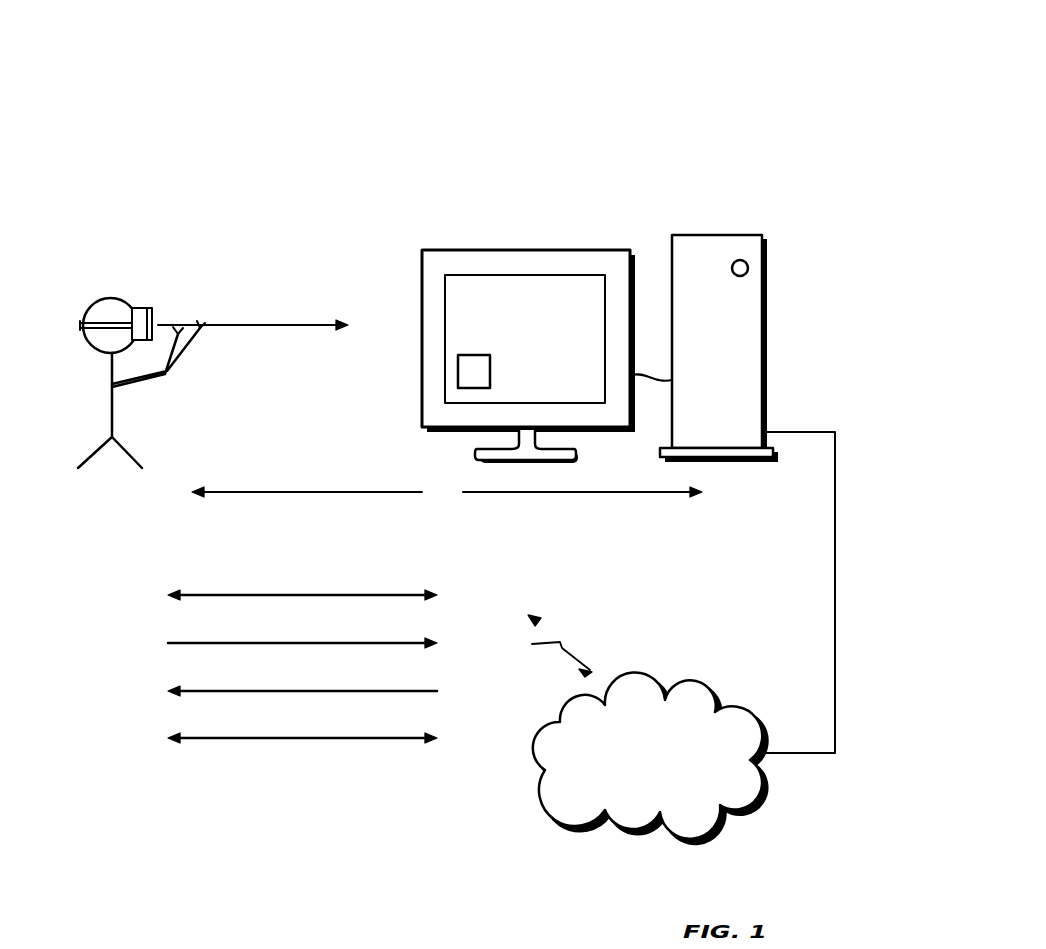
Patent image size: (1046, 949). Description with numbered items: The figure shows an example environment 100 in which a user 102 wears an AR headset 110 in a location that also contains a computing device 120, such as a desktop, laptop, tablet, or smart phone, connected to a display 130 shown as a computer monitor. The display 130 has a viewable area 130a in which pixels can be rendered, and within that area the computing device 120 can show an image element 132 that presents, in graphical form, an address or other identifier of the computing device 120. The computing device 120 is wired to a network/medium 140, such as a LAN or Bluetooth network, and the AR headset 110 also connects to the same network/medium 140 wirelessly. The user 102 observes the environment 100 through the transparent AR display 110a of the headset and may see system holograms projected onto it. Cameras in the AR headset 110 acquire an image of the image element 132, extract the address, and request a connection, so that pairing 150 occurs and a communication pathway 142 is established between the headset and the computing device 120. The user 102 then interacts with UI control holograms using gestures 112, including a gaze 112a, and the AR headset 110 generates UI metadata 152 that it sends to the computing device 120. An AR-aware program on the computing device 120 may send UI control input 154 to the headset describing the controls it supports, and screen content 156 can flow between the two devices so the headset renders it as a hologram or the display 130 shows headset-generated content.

The environment 100 is at (768, 75).
The user 102 is at (112, 372).
The AR headset 110 is at (137, 308).
The AR display 110a is at (222, 306).
The gestures 112 is at (205, 360).
The gaze 112a is at (332, 306).
The computing device 120 is at (710, 235).
The display 130 is at (450, 250).
The viewable area 130a is at (562, 288).
The image element 132 is at (458, 370).
The network/medium 140 is at (660, 791).
The communication pathway 142 is at (447, 491).
The pairing 150 is at (327, 592).
The UI metadata 152 is at (375, 641).
The UI control input 154 is at (373, 687).
The screen content 156 is at (407, 734).